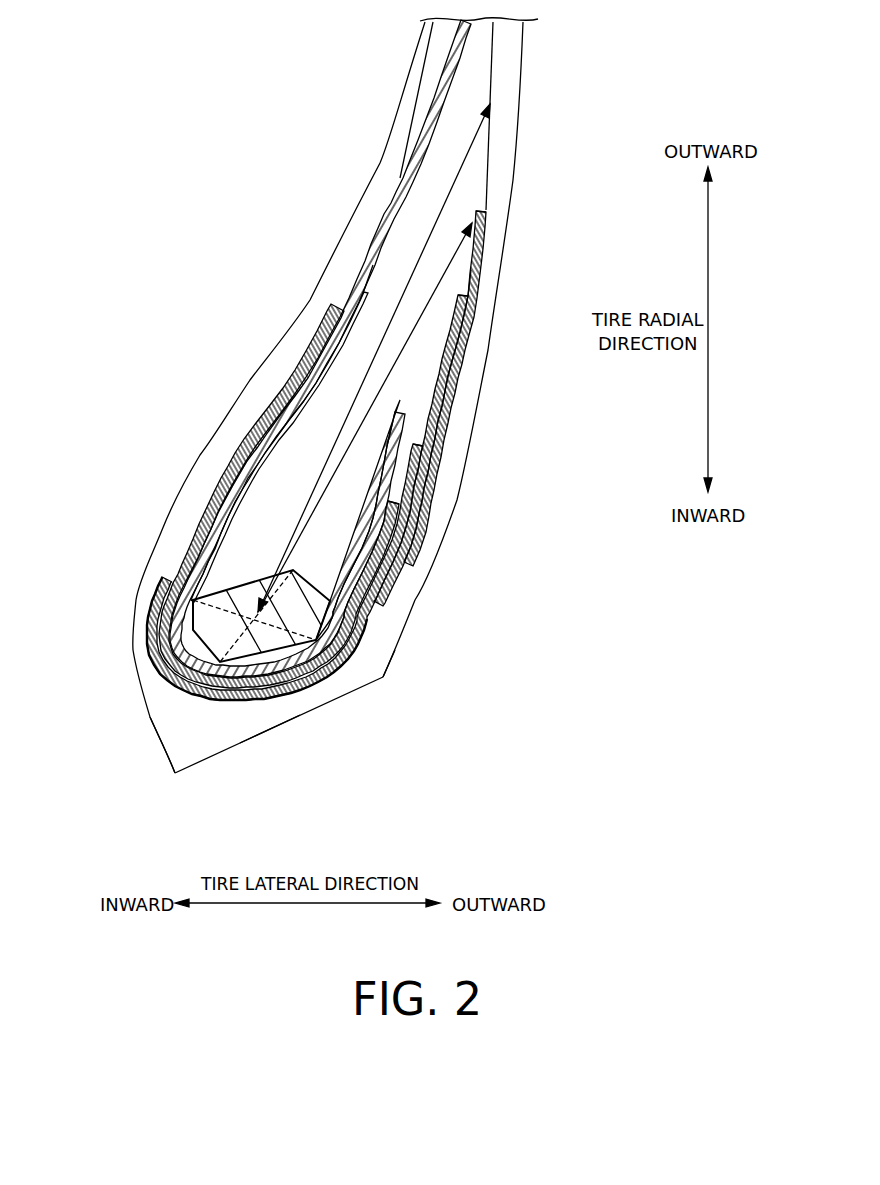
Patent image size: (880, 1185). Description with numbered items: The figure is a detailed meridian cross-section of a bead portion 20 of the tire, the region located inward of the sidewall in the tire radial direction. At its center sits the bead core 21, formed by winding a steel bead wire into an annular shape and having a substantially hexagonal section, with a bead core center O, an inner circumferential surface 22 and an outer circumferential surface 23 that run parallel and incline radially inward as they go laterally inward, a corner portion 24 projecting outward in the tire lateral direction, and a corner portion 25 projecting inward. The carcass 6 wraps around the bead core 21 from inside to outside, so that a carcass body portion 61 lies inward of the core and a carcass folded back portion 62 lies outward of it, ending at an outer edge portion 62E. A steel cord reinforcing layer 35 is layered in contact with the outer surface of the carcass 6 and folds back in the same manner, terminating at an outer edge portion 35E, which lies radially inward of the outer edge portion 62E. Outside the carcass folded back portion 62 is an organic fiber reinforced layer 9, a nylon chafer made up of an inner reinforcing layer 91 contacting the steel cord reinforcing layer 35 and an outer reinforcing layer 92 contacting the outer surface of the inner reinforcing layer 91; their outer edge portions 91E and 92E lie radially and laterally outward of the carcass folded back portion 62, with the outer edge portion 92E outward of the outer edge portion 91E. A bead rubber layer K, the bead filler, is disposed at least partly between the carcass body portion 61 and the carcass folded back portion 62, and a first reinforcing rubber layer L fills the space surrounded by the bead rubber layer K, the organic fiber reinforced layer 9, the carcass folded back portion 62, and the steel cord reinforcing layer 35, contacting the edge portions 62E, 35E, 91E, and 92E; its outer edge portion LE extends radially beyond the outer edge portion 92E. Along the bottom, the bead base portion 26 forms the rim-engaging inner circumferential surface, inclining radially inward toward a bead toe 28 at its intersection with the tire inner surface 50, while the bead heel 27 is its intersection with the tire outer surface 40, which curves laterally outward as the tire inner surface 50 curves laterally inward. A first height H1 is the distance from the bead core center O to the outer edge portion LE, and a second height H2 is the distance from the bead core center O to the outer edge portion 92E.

The bead portion 20 is at (240, 282).
The carcass 6 is at (431, 100).
The carcass body portion 61 is at (258, 452).
The carcass folded back portion 62 is at (404, 535).
The outer edge portion of the carcass folded back portion 62E is at (420, 443).
The steel cord reinforcing layer 35 is at (193, 525).
The outer edge portion of the steel cord reinforcing layer 35E is at (397, 502).
The organic fiber reinforced layer 9 is at (483, 408).
The inner reinforcing layer 91 is at (452, 352).
The outer reinforcing layer 92 is at (456, 383).
The outer edge portion of the inner reinforcing layer 91E is at (470, 293).
The outer edge portion of the outer reinforcing layer 92E is at (488, 212).
The bead core 21 is at (377, 622).
The inner circumferential surface 22 is at (307, 683).
The outer circumferential surface 23 is at (247, 604).
The corner portion 24 is at (383, 598).
The corner portion 25 is at (150, 630).
The bead base portion 26 is at (272, 725).
The bead heel 27 is at (385, 678).
The bead toe 28 is at (175, 773).
The tire outer surface 40 is at (398, 653).
The tire inner surface 50 is at (133, 590).
The bead core center O is at (241, 583).
The bead rubber layer K is at (380, 283).
The first reinforcing rubber layer L is at (470, 278).
The outer edge portion of the first reinforcing rubber layer LE is at (492, 106).
The first height H1 is at (374, 358).
The second height H2 is at (365, 417).